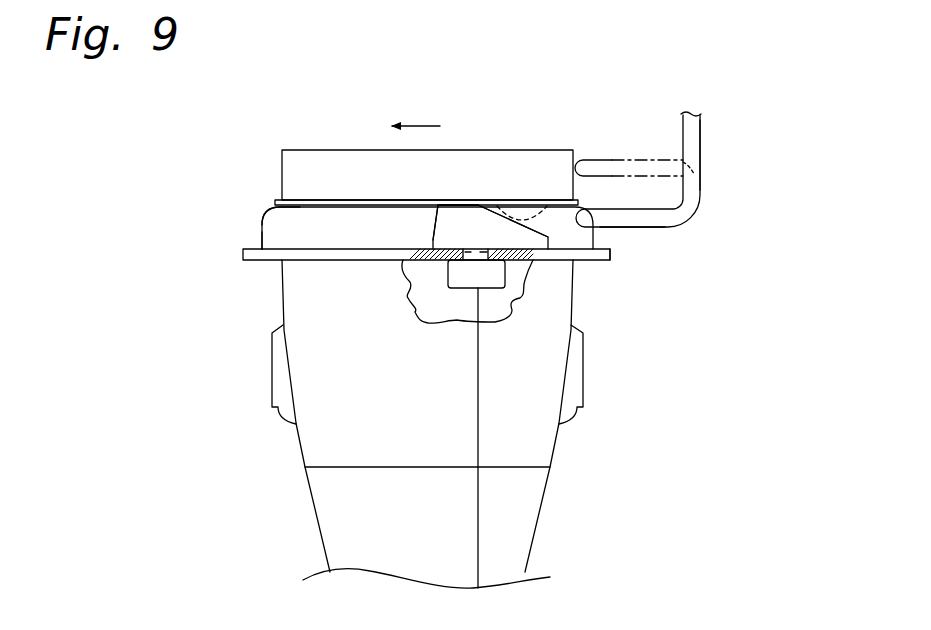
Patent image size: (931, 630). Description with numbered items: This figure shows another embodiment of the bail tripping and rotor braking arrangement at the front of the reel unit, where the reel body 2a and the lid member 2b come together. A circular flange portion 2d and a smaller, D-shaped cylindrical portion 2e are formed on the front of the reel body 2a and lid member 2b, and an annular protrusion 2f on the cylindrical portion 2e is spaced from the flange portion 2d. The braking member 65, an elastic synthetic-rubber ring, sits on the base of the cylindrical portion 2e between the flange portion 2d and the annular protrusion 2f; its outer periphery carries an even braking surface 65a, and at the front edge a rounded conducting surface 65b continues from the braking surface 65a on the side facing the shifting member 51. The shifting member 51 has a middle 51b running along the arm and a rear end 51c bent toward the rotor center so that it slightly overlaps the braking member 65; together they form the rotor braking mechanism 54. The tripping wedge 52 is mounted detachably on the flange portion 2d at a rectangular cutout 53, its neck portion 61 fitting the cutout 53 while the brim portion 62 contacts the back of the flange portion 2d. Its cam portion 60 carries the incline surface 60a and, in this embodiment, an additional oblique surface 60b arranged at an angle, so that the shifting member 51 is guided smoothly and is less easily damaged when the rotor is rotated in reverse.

The reel body 2a is at (298, 442).
The lid member 2b is at (557, 442).
The flange portion 2d is at (610, 260).
The cylindrical portion 2e is at (558, 162).
The annular protrusion 2f is at (270, 203).
The shifting member 51 is at (705, 226).
The middle 51b is at (701, 138).
The rear end 51c is at (650, 228).
The tripping wedge 52 is at (463, 190).
The cutout 53 is at (484, 254).
The rotor braking mechanism 54 is at (205, 238).
The cam portion 60 is at (452, 233).
The incline surface 60a is at (535, 206).
The oblique surface 60b is at (436, 206).
The neck portion 61 is at (450, 262).
The brim portion 62 is at (467, 275).
The braking member 65 is at (280, 220).
The braking surface 65a is at (262, 237).
The conducting surface 65b is at (265, 211).